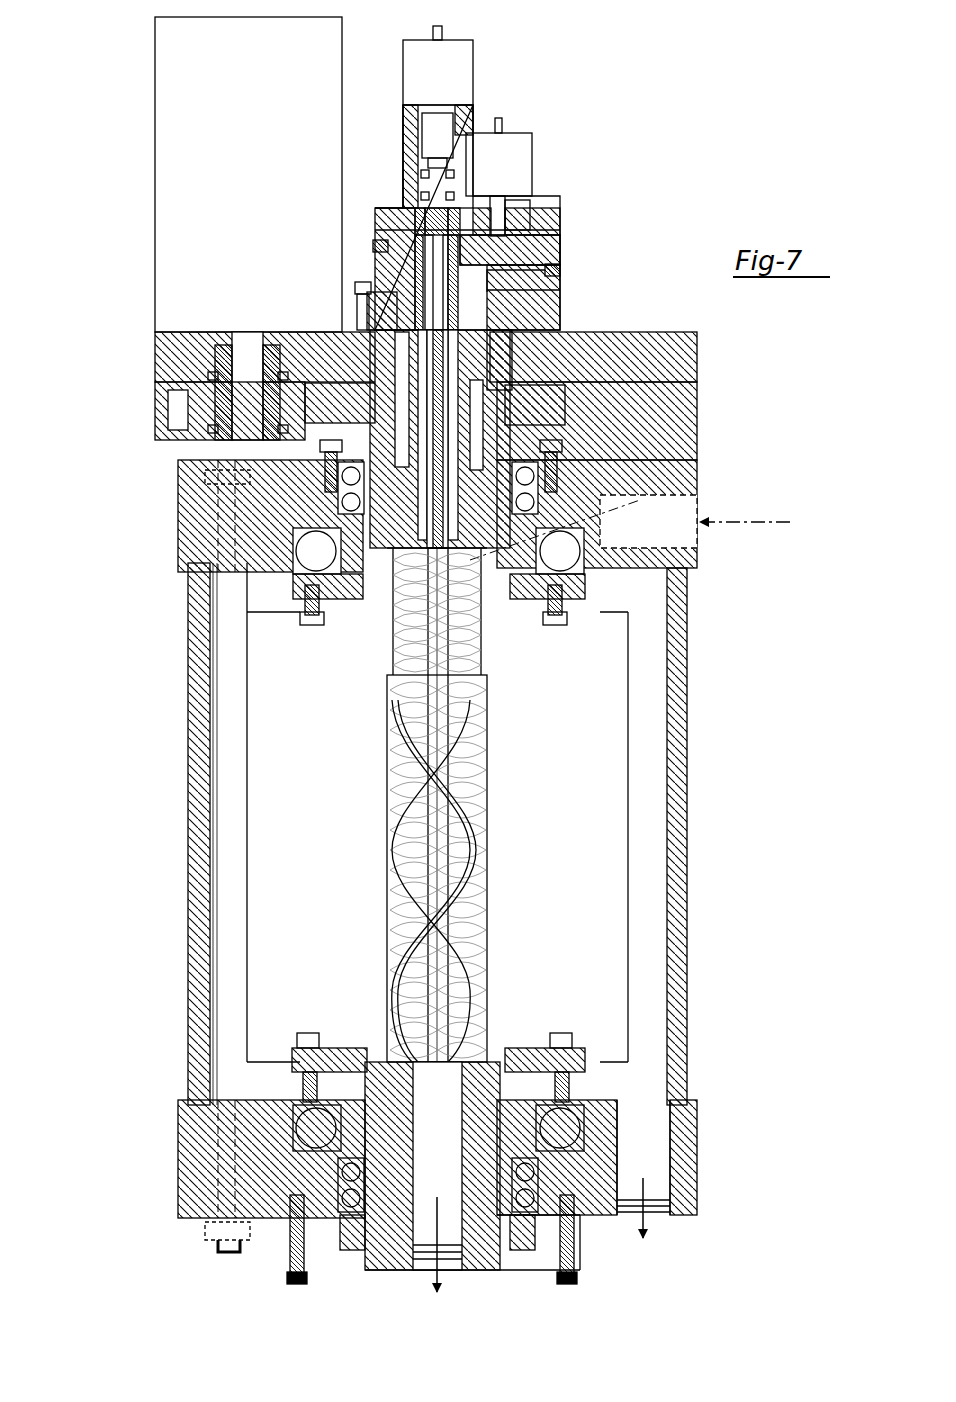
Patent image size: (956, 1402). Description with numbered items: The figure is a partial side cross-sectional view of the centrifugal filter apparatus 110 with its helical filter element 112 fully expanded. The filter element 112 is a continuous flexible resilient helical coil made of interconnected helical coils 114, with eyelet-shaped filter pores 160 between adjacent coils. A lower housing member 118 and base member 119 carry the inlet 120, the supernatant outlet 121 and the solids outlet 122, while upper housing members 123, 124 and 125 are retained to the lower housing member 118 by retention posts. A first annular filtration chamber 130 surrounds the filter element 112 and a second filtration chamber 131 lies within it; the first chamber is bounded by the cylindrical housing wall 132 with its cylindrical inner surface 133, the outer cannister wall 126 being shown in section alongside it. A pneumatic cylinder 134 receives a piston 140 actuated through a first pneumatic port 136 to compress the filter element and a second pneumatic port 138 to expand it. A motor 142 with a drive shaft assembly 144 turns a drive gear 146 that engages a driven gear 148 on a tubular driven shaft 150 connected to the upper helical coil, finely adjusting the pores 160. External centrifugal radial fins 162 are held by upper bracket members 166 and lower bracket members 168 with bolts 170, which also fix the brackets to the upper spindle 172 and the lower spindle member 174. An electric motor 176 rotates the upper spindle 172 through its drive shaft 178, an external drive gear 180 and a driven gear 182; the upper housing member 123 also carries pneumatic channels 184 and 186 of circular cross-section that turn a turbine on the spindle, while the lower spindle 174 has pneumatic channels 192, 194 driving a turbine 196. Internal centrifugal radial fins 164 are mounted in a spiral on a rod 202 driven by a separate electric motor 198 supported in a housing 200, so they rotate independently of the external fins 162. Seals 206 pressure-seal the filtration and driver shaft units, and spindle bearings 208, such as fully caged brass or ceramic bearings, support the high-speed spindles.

The centrifugal filter apparatus 110 is at (100, 296).
The helical filter element 112 is at (476, 776).
The helical coils 114 is at (472, 906).
The lower housing member 118 is at (180, 1180).
The base member 119 is at (492, 1262).
The inlet 120 is at (695, 519).
The supernatant outlet 121 is at (436, 1255).
The solids outlet 122 is at (642, 1221).
The upper housing member 123 is at (180, 518).
The upper housing member 124 is at (697, 418).
The upper housing member 125 is at (697, 358).
The outer cylinder wall 126 is at (225, 917).
The first annular filtration chamber 130 is at (446, 834).
The second filtration chamber 131 is at (472, 731).
The cylindrical housing wall 132 is at (688, 896).
The cylindrical inner surface 133 is at (668, 790).
The pneumatic cylinder 134 is at (500, 326).
The first pneumatic port 136 is at (372, 246).
The second pneumatic port 138 is at (560, 270).
The piston 140 is at (480, 376).
The motor 142 is at (532, 138).
The drive shaft assembly 144 is at (512, 230).
The drive gear 146 is at (522, 210).
The driven gear 148 is at (455, 216).
The tubular driven shaft 150 is at (382, 318).
The eyelet-shaped filter pores 160 is at (392, 752).
The external centrifugal radial fins 162 is at (265, 685).
The internal centrifugal radial fins 164 is at (396, 815).
The upper bracket member 166 is at (336, 624).
The lower bracket member 168 is at (562, 1036).
The bolts 170 is at (556, 630).
The upper spindle 172 is at (520, 388).
The lower spindle member 174 is at (522, 1082).
The electric motor 176 is at (261, 58).
The drive shaft 178 is at (248, 338).
The external drive gear 180 is at (185, 405).
The driven gear 182 is at (328, 380).
The pneumatic channel 184 is at (316, 552).
The pneumatic channel 186 is at (556, 538).
The pneumatic channel 192 is at (546, 1130).
The pneumatic channel 194 is at (318, 1126).
The turbine 196 is at (296, 1120).
The electric motor 198 is at (425, 126).
The housing 200 is at (405, 50).
The rod 202 is at (446, 852).
The seals 206 is at (556, 446).
The spindle bearings 208 is at (344, 503).